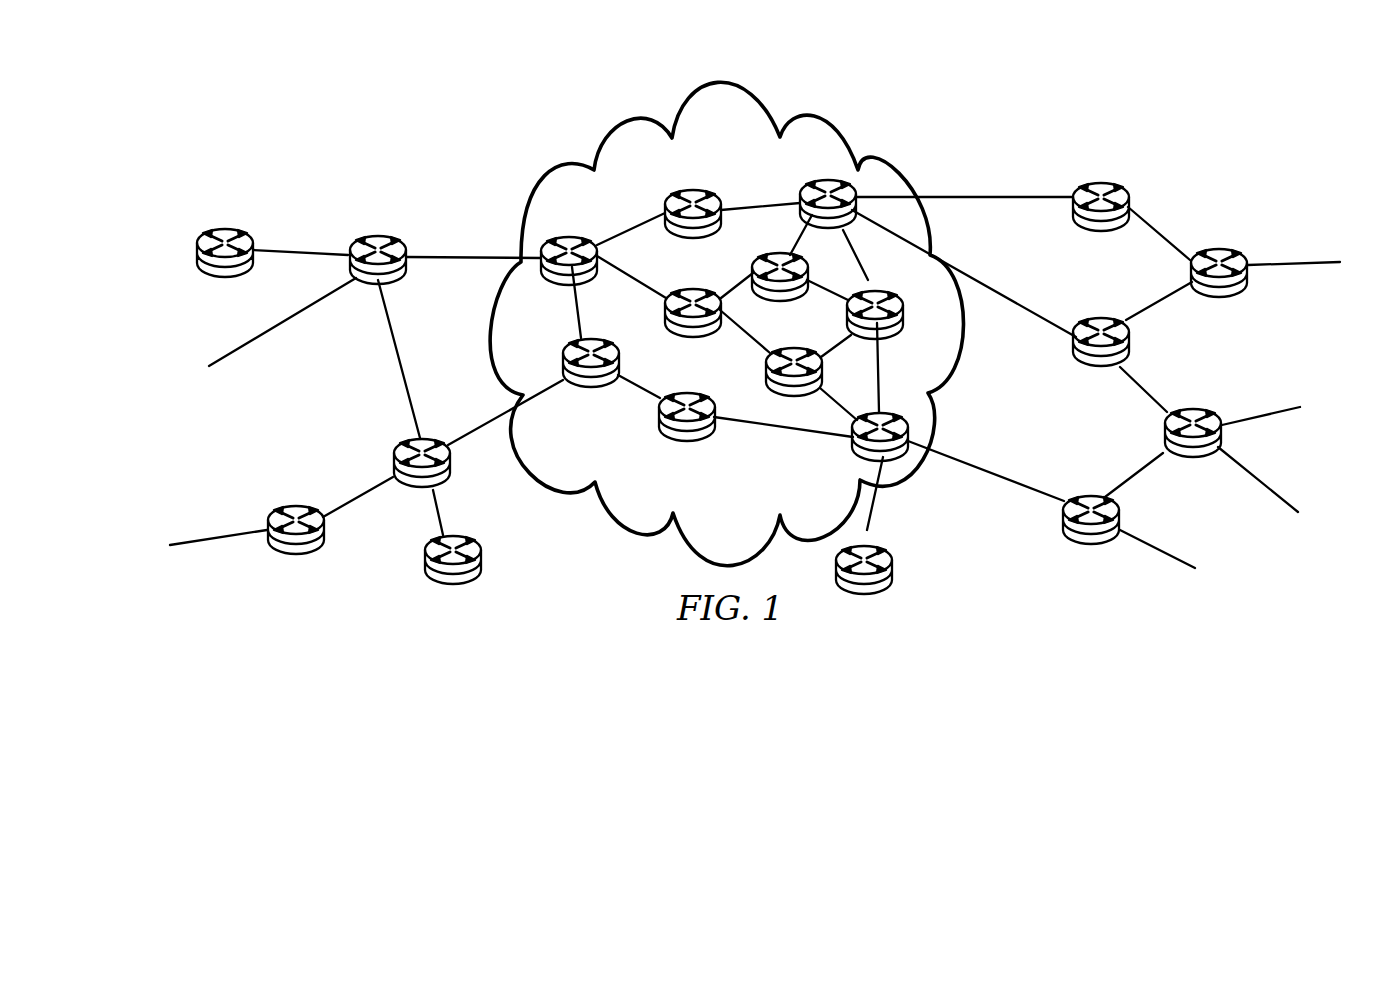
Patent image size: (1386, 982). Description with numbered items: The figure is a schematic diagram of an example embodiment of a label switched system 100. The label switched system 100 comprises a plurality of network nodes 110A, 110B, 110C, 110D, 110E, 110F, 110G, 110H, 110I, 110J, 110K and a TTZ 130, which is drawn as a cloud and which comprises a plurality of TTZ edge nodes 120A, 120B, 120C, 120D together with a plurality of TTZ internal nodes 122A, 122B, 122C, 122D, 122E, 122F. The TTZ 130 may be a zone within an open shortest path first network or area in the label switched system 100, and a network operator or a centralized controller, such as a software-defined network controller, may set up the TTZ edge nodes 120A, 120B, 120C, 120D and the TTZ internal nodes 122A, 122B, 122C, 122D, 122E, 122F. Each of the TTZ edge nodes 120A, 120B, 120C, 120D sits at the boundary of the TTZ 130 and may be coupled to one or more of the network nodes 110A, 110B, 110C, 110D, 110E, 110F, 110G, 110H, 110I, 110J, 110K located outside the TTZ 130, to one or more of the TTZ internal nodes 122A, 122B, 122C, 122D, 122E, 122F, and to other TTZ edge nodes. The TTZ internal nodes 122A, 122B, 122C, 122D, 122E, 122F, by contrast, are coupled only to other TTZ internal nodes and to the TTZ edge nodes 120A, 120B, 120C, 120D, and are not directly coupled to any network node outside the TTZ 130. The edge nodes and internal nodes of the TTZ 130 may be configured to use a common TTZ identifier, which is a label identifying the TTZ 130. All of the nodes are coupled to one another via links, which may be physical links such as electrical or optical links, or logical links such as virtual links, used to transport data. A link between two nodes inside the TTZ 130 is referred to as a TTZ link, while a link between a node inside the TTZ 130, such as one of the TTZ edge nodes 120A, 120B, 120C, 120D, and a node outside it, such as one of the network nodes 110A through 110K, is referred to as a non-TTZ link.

The label switched system 100 is at (302, 60).
The network node 110A is at (198, 244).
The network node 110B is at (373, 236).
The network node 110C is at (291, 506).
The network node 110D is at (401, 445).
The network node 110E is at (482, 557).
The network node 110F is at (893, 565).
The network node 110G is at (1096, 183).
The network node 110H is at (1213, 250).
The network node 110I is at (1097, 319).
The network node 110J is at (1187, 410).
The network node 110K is at (1082, 497).
The TTZ edge node 120A is at (565, 272).
The TTZ edge node 120B is at (822, 181).
The TTZ edge node 120C is at (858, 448).
The TTZ edge node 120D is at (620, 364).
The TTZ internal node 122A is at (693, 189).
The TTZ internal node 122B is at (691, 290).
The TTZ internal node 122C is at (772, 255).
The TTZ internal node 122D is at (690, 437).
The TTZ internal node 122E is at (790, 349).
The TTZ internal node 122F is at (884, 292).
The TTZ 130 is at (911, 182).